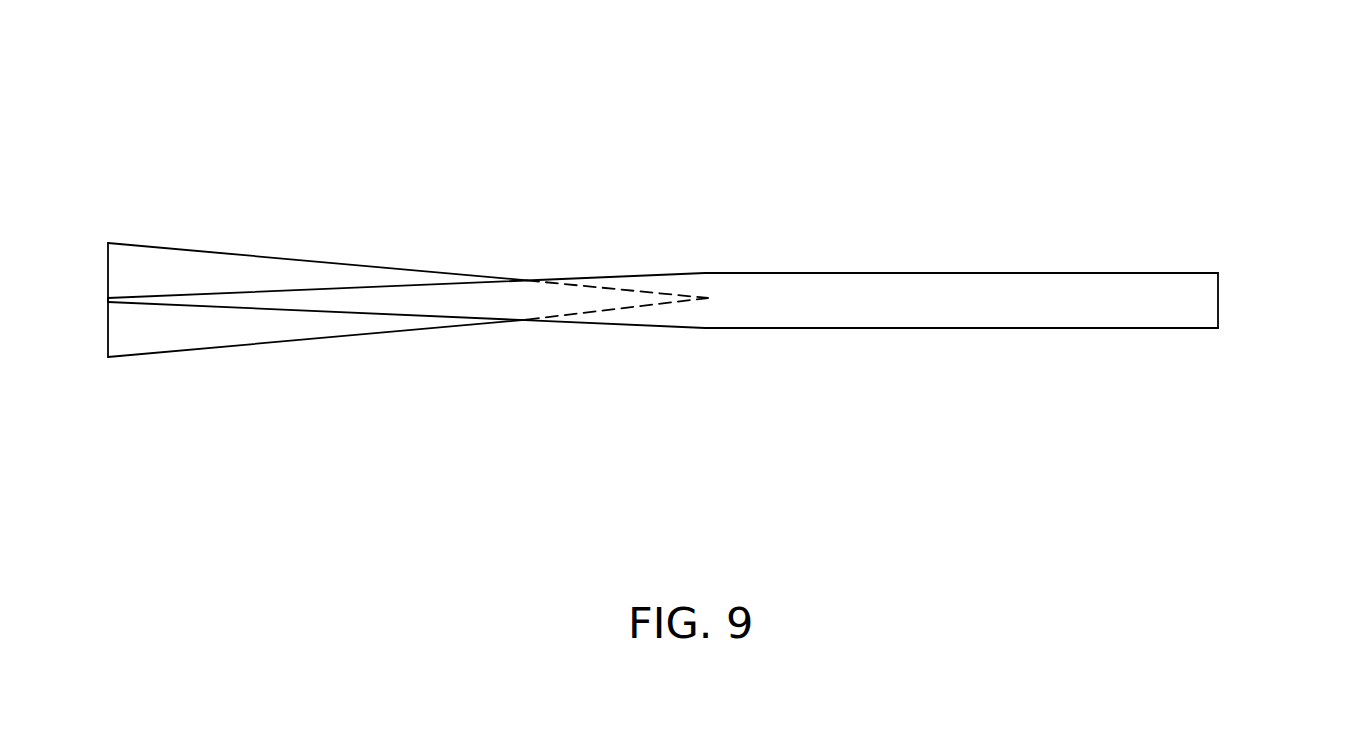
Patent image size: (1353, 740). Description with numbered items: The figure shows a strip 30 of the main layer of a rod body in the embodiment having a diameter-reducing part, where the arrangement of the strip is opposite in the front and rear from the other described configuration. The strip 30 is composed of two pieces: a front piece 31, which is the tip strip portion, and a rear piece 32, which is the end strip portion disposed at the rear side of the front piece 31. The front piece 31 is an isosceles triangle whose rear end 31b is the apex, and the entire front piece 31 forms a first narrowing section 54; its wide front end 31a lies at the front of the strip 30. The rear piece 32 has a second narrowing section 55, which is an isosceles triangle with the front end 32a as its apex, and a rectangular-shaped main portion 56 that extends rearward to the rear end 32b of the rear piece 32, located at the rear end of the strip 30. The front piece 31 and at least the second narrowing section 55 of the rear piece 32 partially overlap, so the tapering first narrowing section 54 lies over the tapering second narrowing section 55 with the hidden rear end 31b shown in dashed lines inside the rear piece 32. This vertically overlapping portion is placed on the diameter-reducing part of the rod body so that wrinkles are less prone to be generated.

The strip 30 is at (1085, 192).
The front piece 31 is at (200, 251).
The front end of the front piece 31a is at (106, 268).
The rear end of the front piece 31b is at (714, 292).
The rear piece 32 is at (938, 272).
The front end of the rear piece 32a is at (107, 300).
The rear end of the rear piece 32b is at (1220, 298).
The first narrowing section 54 is at (255, 343).
The second narrowing section 55 is at (363, 313).
The main portion 56 is at (985, 328).